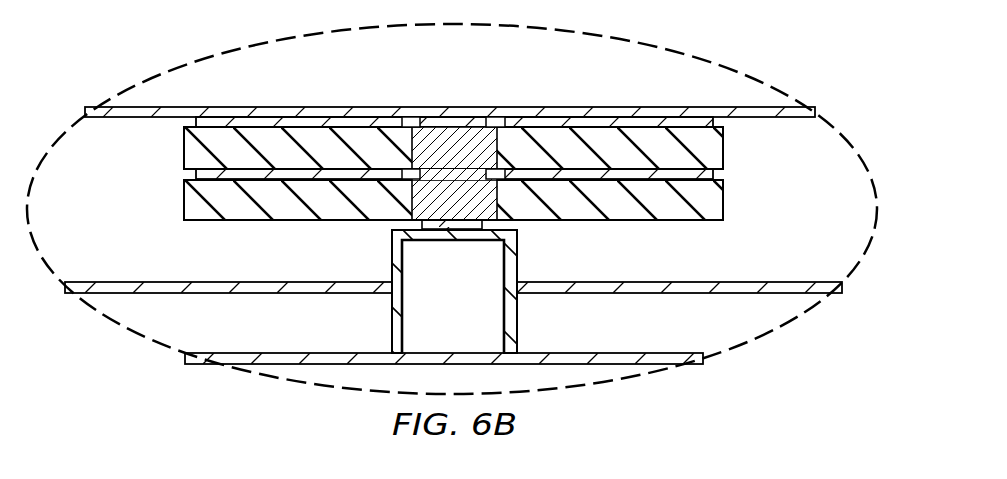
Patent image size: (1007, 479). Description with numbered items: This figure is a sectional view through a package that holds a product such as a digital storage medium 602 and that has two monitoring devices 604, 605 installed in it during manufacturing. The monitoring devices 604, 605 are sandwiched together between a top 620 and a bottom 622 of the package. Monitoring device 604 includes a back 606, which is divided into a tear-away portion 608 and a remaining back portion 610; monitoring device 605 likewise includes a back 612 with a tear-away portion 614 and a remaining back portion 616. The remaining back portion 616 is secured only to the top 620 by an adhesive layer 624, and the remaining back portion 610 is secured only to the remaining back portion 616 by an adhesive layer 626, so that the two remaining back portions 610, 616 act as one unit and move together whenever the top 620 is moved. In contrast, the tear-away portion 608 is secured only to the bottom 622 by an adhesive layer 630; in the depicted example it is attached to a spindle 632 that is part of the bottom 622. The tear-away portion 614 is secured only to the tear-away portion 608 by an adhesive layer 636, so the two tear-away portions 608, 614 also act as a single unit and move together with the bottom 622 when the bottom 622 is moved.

The digital storage medium 602 is at (218, 288).
The monitoring device 604 is at (192, 205).
The monitoring device 605 is at (528, 133).
The back 606 is at (454, 173).
The tear-away portion 608 is at (482, 200).
The remaining back portion 610 is at (247, 222).
The back 612 is at (460, 111).
The tear-away portion 614 is at (463, 133).
The remaining back portion 616 is at (367, 135).
The top 620 is at (277, 112).
The bottom 622 is at (330, 357).
The adhesive layer 624 is at (322, 125).
The adhesive layer 626 is at (203, 174).
The adhesive layer 630 is at (433, 222).
The spindle 632 is at (435, 311).
The adhesive layer 636 is at (432, 173).